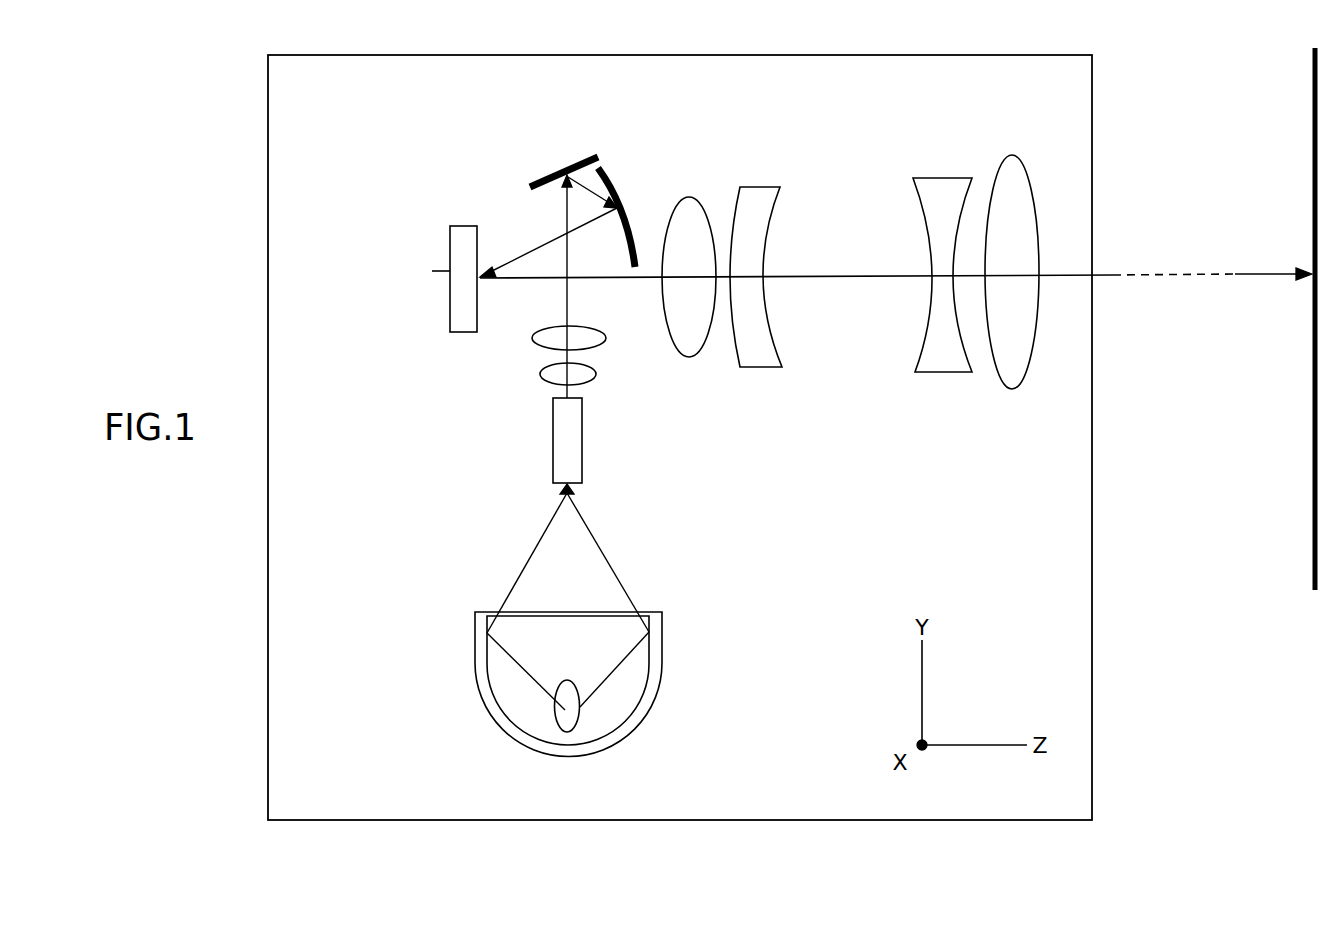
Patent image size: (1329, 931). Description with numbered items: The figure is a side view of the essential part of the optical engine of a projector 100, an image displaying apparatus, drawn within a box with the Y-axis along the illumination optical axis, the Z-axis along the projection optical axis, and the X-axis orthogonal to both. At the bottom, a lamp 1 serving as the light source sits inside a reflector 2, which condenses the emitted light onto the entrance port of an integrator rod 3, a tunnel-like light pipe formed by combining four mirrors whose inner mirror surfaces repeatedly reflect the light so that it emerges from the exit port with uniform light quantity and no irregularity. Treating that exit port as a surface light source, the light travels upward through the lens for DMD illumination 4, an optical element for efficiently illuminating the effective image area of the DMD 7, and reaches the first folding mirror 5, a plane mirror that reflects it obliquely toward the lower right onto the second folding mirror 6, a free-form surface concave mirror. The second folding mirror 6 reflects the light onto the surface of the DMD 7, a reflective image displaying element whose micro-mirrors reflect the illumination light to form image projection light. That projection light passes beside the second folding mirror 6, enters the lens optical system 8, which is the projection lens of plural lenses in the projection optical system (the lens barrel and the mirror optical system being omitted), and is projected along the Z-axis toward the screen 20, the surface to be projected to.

The lamp 1 is at (565, 712).
The reflector 2 is at (628, 738).
The integrator rod 3 is at (553, 470).
The lens for DMD illumination 4 is at (525, 318).
The first folding mirror 5 is at (552, 170).
The second folding mirror 6 is at (613, 180).
The DMD 7 is at (450, 270).
The lens optical system 8 is at (675, 390).
The screen 20 is at (1313, 148).
The projector 100 is at (1027, 803).